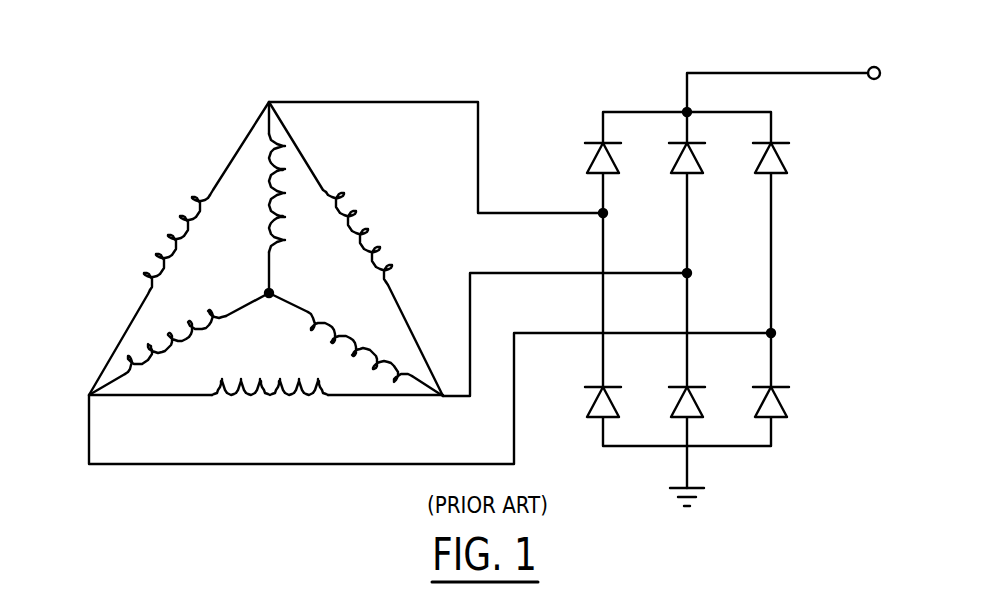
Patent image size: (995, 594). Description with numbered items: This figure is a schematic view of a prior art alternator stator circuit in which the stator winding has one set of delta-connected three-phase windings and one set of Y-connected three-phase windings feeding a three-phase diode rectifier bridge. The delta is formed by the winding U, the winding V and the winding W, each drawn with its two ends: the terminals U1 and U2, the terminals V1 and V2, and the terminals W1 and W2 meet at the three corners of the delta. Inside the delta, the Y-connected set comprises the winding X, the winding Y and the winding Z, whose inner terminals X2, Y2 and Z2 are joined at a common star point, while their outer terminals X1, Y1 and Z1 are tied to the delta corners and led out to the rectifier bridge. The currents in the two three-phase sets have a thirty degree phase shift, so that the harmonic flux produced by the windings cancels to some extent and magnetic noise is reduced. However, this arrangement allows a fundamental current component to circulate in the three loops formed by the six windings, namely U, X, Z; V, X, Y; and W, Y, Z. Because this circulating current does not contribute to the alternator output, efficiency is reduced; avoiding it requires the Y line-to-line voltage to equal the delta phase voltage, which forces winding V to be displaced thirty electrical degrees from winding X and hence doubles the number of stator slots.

The delta-connected phase winding U is at (167, 242).
The terminal of winding U U1 is at (228, 148).
The terminal of winding U U2 is at (117, 342).
The delta-connected phase winding V is at (366, 237).
The terminal of winding V V1 is at (414, 339).
The terminal of winding V V2 is at (314, 147).
The delta-connected phase winding W is at (270, 407).
The terminal of winding W W1 is at (150, 418).
The terminal of winding W W2 is at (385, 419).
The Y-connected phase winding X is at (291, 193).
The terminal of winding X X1 is at (436, 138).
The terminal of winding X X2 is at (297, 272).
The Y-connected phase winding Y is at (360, 347).
The terminal of winding Y Y1 is at (544, 362).
The terminal of winding Y Y2 is at (288, 322).
The Y-connected phase winding Z is at (175, 342).
The terminal of winding Z Z1 is at (430, 398).
The terminal of winding Z Z2 is at (246, 286).